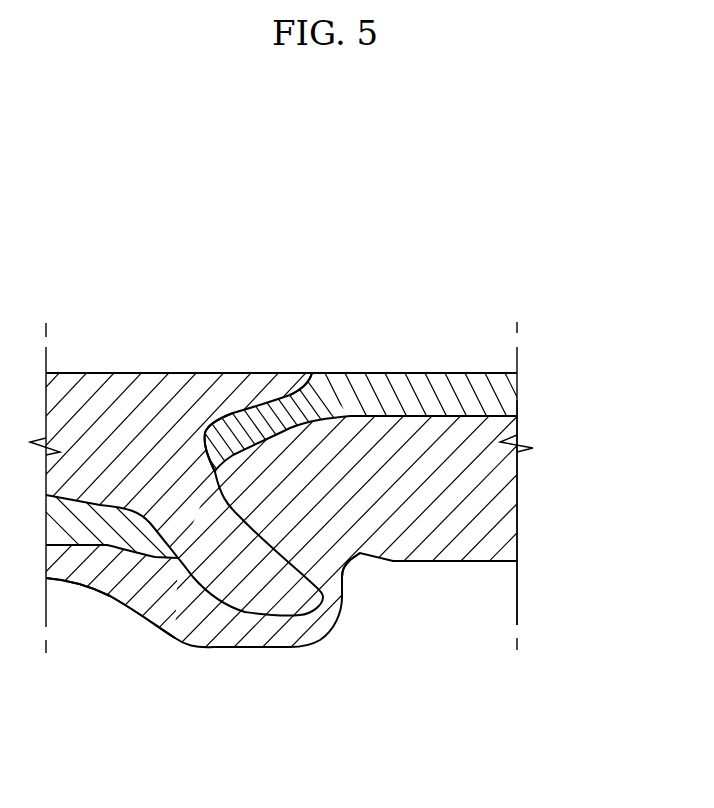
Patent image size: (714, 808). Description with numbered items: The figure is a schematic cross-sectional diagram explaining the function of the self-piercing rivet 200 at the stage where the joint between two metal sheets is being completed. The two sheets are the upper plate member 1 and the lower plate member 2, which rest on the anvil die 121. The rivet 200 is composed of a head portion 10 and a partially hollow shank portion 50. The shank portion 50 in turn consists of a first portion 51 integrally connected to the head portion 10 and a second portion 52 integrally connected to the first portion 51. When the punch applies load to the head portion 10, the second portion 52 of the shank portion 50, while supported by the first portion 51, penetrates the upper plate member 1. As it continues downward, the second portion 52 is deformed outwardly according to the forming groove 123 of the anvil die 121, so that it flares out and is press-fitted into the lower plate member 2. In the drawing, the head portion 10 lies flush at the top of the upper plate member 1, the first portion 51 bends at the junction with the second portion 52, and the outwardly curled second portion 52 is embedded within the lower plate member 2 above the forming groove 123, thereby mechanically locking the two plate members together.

The rivet 200 is at (289, 247).
The upper plate member 1 is at (463, 388).
The lower plate member 2 is at (495, 513).
The head portion 10 is at (289, 385).
The shank portion 50 is at (229, 612).
The first portion 51 is at (214, 462).
The second portion 52 is at (342, 570).
The anvil die 121 is at (524, 596).
The forming groove 123 is at (107, 580).